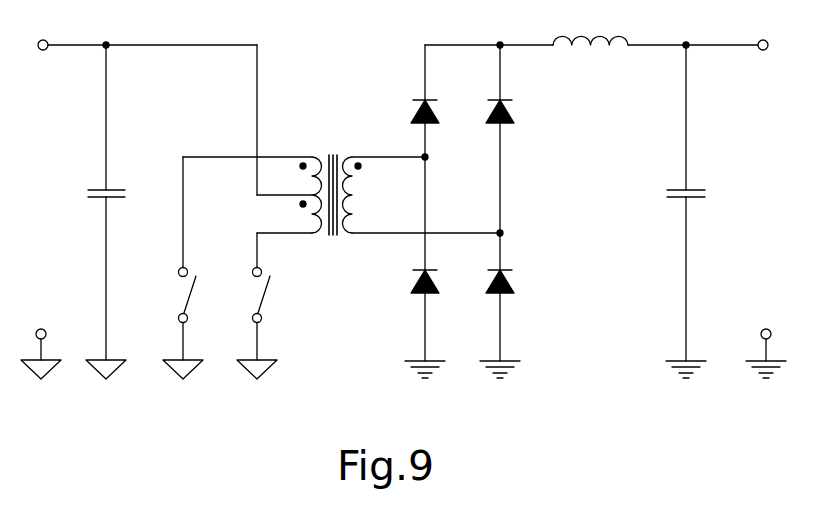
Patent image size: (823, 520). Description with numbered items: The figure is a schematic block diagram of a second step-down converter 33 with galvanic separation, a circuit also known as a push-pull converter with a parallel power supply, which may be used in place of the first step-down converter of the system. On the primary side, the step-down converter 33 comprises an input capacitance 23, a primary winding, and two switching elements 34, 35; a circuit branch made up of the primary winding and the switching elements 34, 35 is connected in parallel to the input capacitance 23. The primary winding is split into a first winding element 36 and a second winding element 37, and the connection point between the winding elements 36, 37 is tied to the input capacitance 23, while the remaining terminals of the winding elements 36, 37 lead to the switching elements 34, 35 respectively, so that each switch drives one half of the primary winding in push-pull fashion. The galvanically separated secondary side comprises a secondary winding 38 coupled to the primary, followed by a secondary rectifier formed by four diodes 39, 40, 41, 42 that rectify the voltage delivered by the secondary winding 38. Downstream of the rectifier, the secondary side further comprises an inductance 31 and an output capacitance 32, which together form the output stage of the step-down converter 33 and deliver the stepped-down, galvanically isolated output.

The input capacitance 23 is at (115, 190).
The inductance 31 is at (623, 35).
The output capacitance 32 is at (693, 190).
The second step-down converter 33 is at (229, 309).
The switching element 34 is at (189, 296).
The switching element 35 is at (266, 293).
The first winding element 36 is at (313, 157).
The second winding element 37 is at (314, 234).
The secondary winding 38 is at (347, 213).
The diode 39 is at (435, 110).
The diode 40 is at (435, 282).
The diode 41 is at (510, 110).
The diode 42 is at (510, 282).